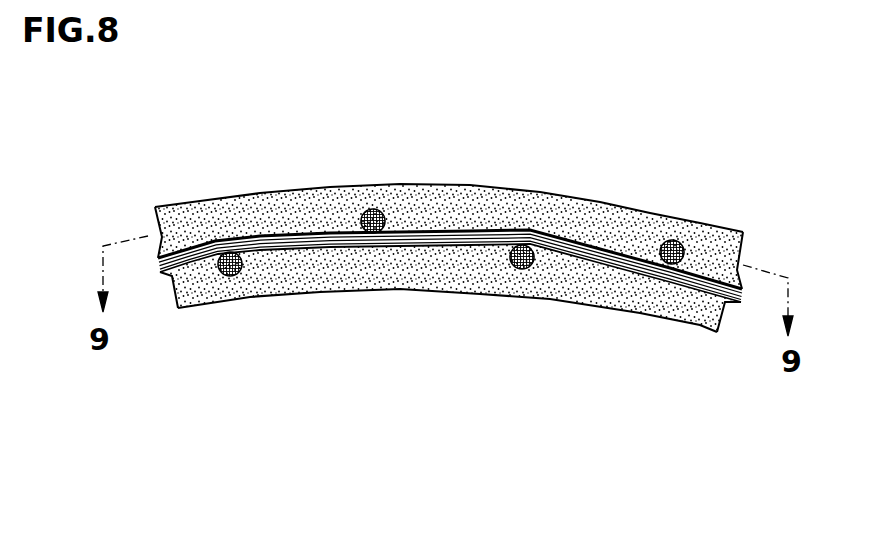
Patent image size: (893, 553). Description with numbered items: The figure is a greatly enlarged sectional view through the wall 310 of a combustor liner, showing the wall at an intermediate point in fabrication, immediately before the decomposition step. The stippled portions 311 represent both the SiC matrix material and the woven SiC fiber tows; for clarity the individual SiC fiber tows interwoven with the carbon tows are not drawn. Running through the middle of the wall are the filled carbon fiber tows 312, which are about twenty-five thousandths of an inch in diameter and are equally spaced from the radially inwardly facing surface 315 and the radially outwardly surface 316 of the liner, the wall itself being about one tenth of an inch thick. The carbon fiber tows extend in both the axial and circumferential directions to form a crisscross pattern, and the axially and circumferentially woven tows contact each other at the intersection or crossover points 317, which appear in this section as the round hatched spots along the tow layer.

The wall 310 is at (153, 176).
The stippled portions 311 is at (275, 208).
The filled carbon fiber tows 312 is at (323, 243).
The radially inwardly facing surface 315 is at (427, 291).
The radially outwardly surface 316 is at (430, 185).
The intersection or crossover points 317 is at (666, 264).